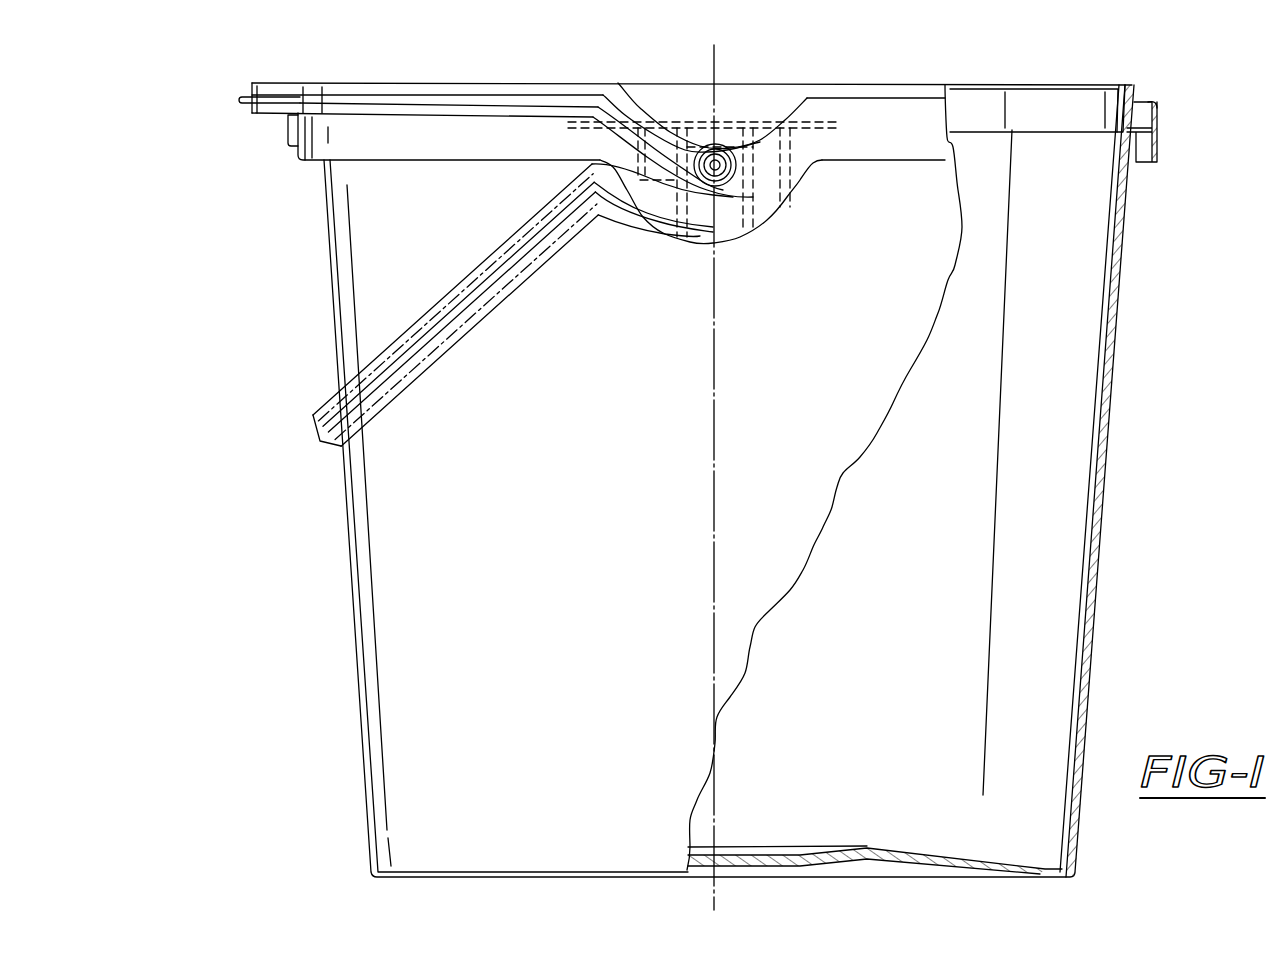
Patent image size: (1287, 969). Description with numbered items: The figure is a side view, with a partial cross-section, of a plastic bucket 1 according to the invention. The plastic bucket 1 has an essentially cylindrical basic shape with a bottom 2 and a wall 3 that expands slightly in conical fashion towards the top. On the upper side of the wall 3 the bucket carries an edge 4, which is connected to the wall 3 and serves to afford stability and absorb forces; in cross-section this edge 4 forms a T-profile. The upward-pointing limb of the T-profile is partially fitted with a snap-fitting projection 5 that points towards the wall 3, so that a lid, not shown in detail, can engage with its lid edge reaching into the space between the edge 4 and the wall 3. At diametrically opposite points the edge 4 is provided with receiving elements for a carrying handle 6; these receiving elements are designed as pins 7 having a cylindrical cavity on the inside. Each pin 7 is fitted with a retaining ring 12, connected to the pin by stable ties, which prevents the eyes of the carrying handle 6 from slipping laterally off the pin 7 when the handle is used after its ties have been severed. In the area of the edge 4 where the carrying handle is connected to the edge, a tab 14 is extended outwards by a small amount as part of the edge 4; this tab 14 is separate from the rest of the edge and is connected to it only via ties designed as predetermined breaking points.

The plastic bucket 1 is at (562, 457).
The bottom 2 is at (867, 848).
The wall 3 is at (1108, 488).
The edge 4 is at (382, 143).
The snap-fitting projection 5 is at (1158, 104).
The carrying handle 6 is at (280, 98).
The pin 7 is at (740, 167).
The retaining ring 12 is at (733, 148).
The tab 14 is at (293, 135).